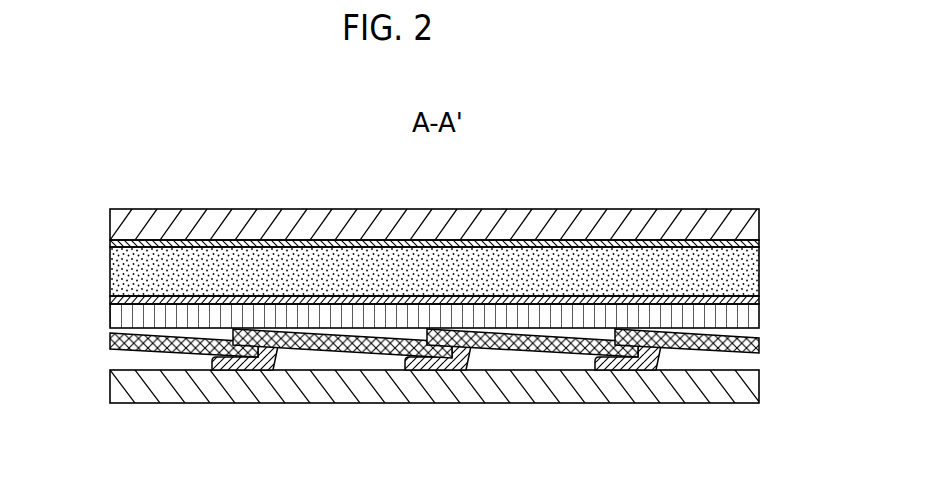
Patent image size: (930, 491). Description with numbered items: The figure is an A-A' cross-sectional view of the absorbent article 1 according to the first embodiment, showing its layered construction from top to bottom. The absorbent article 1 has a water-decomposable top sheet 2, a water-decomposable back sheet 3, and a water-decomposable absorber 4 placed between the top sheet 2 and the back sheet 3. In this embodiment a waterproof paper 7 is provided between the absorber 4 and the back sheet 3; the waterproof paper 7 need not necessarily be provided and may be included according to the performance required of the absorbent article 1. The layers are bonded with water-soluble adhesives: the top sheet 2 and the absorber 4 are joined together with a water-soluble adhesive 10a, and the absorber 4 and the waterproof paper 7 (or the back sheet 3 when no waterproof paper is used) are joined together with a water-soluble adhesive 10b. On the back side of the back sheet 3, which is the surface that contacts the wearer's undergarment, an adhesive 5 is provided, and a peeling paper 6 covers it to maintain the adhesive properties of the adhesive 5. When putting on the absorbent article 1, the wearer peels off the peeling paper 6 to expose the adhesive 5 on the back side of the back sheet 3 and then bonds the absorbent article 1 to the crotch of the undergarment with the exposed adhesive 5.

The absorbent article 1 is at (100, 182).
The top sheet 2 is at (753, 226).
The water-soluble adhesive 10a is at (110, 243).
The absorber 4 is at (753, 272).
The water-soluble adhesive 10b is at (110, 301).
The waterproof paper 7 is at (753, 317).
The back sheet 3 is at (753, 343).
The adhesive 5 is at (638, 370).
The peeling paper 6 is at (753, 394).